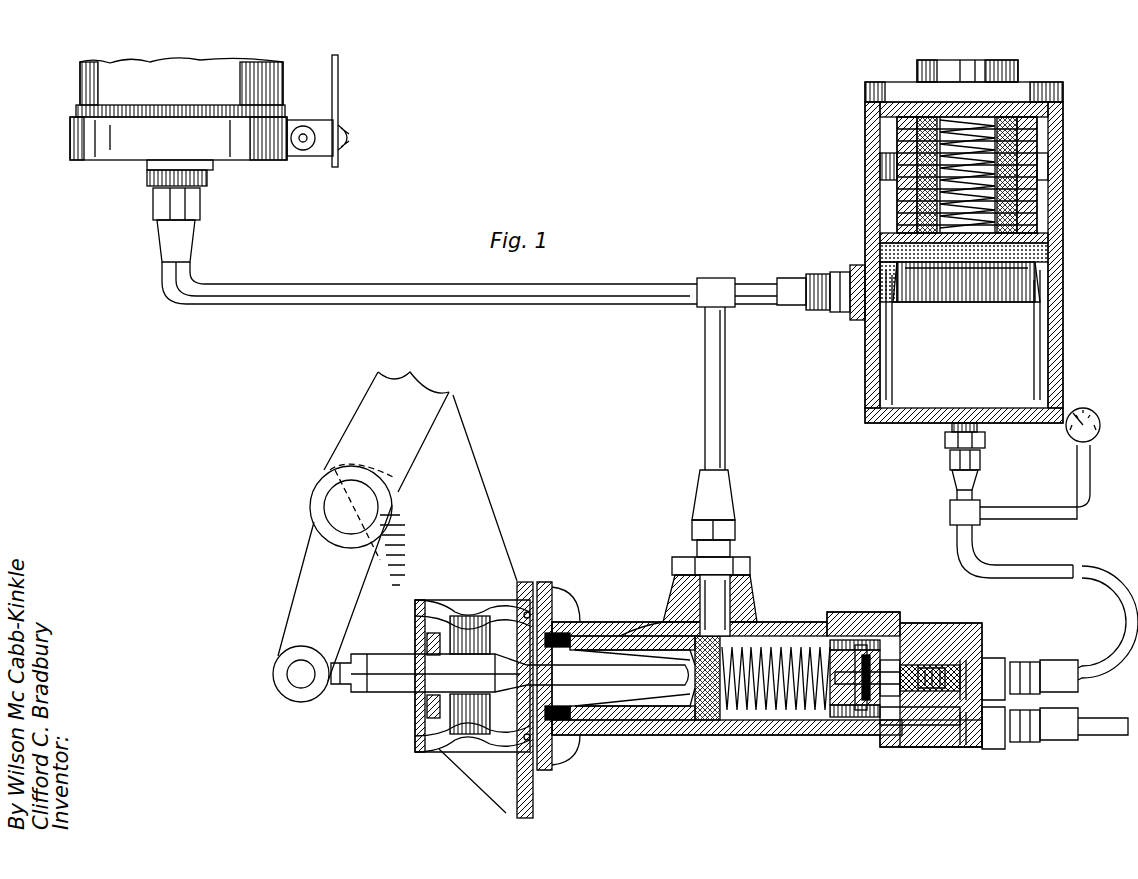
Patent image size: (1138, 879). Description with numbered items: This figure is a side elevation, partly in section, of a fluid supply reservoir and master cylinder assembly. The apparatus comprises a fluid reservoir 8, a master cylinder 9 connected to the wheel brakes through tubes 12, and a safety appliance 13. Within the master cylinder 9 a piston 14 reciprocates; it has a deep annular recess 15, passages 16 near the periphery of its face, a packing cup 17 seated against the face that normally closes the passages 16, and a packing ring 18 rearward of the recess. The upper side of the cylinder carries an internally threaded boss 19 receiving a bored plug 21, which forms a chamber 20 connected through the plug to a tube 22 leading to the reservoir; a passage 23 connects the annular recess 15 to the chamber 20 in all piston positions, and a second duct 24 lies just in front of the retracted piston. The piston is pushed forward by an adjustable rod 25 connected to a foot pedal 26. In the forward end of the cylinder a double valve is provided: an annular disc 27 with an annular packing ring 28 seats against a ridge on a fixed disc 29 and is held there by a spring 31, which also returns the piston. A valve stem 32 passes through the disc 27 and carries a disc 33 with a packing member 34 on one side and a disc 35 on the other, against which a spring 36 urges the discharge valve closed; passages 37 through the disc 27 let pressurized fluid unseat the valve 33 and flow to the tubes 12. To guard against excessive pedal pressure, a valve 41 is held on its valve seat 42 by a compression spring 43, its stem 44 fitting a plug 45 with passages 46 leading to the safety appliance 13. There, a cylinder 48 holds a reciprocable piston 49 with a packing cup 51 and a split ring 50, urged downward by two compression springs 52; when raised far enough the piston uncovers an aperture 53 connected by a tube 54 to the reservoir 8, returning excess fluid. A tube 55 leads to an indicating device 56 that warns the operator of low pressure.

The fluid reservoir 8 is at (80, 130).
The master cylinder 9 is at (590, 630).
The tubes 12 is at (1100, 735).
The safety appliance 13 is at (1052, 250).
The piston 14 is at (640, 722).
The annular recess 15 is at (605, 722).
The passages 16 is at (678, 722).
The packing cup 17 is at (1117, 606).
The packing ring 18 is at (563, 632).
The internally threaded boss 19 is at (752, 600).
The chamber 20 is at (690, 600).
The bored plug 21 is at (745, 565).
The tube 22 is at (722, 452).
The passage 23 is at (700, 632).
The second duct 24 is at (760, 640).
The adjustable rod 25 is at (391, 682).
The foot pedal 26 is at (452, 398).
The annular disc 27 is at (885, 645).
The annular packing ring 28 is at (905, 650).
The disc 29 is at (925, 650).
The spring 31 is at (765, 722).
The valve stem 32 is at (840, 747).
The disc 33 is at (905, 747).
The packing member 34 is at (945, 660).
The disc 35 is at (820, 722).
The spring 36 is at (858, 640).
The passages 37 is at (868, 747).
The valve 41 is at (935, 747).
The valve seat 42 is at (992, 655).
The compression spring 43 is at (1018, 660).
The stem 44 is at (965, 747).
The plug 45 is at (1050, 666).
The passages 46 is at (1026, 666).
The cylinder 48 is at (870, 168).
The reciprocable piston 49 is at (1040, 207).
The split ring 50 is at (1058, 283).
The packing cup 51 is at (1033, 300).
The compression springs 52 is at (895, 125).
The aperture 53 is at (870, 272).
The tube 54 is at (462, 284).
The tube 55 is at (1040, 520).
The indicating device 56 is at (1108, 402).